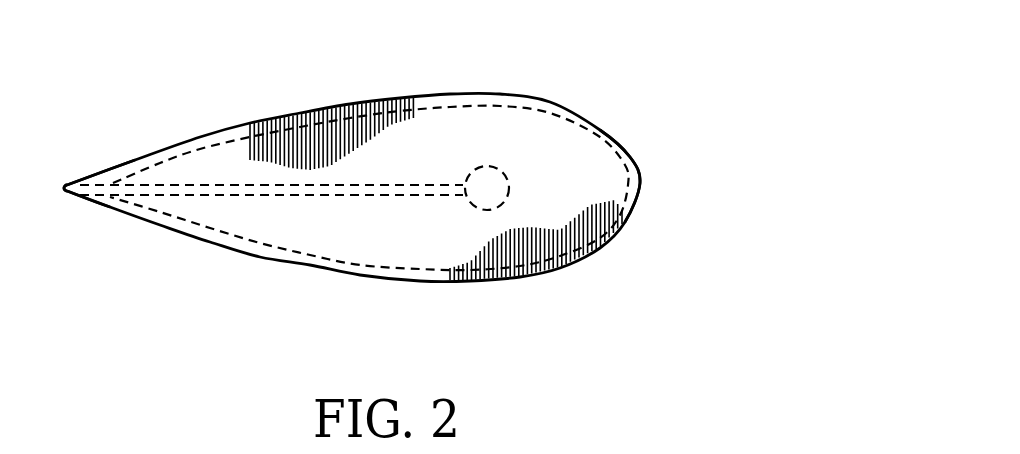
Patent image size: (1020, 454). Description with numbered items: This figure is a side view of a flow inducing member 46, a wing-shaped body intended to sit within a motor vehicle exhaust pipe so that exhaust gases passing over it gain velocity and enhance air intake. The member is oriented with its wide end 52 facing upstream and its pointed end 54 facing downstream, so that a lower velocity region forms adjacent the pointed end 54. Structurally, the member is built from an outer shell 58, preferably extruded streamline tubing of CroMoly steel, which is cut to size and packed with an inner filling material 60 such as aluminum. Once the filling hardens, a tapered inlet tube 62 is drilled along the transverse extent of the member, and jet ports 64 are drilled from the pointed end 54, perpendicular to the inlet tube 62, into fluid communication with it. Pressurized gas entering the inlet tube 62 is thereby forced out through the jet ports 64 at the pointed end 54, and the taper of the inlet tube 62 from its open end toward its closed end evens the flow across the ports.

The flow inducing member 46 is at (553, 105).
The wide end 52 is at (637, 162).
The pointed end 54 is at (135, 160).
The outer shell 58 is at (618, 242).
The inner filling material 60 is at (463, 125).
The inlet tube 62 is at (483, 211).
The jet ports 64 is at (297, 197).